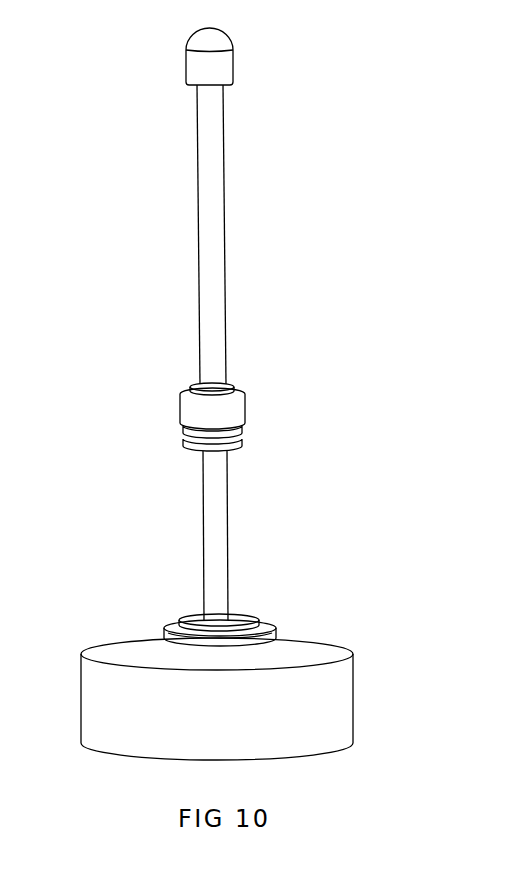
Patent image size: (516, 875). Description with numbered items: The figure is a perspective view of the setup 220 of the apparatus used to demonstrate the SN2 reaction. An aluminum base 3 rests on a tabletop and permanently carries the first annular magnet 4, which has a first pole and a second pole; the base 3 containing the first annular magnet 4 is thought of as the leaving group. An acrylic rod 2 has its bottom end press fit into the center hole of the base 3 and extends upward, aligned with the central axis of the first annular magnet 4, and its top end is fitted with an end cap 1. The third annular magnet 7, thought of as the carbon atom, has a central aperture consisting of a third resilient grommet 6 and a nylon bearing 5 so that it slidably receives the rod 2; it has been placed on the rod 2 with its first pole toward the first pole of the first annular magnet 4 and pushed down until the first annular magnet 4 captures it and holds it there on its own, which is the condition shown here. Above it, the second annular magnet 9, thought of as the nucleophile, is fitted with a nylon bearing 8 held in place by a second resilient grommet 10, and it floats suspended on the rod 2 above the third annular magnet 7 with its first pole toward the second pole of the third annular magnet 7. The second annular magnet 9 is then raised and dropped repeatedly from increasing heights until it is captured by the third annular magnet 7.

The setup 220 is at (153, 207).
The end cap 1 is at (233, 62).
The rod 2 is at (226, 230).
The aluminum base 3 is at (353, 703).
The first annular magnet 4 is at (302, 756).
The nylon bearing 5 is at (259, 615).
The third resilient grommet 6 is at (293, 615).
The third annular magnet 7 is at (278, 629).
The nylon bearing 8 is at (234, 384).
The second annular magnet 9 is at (245, 407).
The second resilient grommet 10 is at (244, 447).